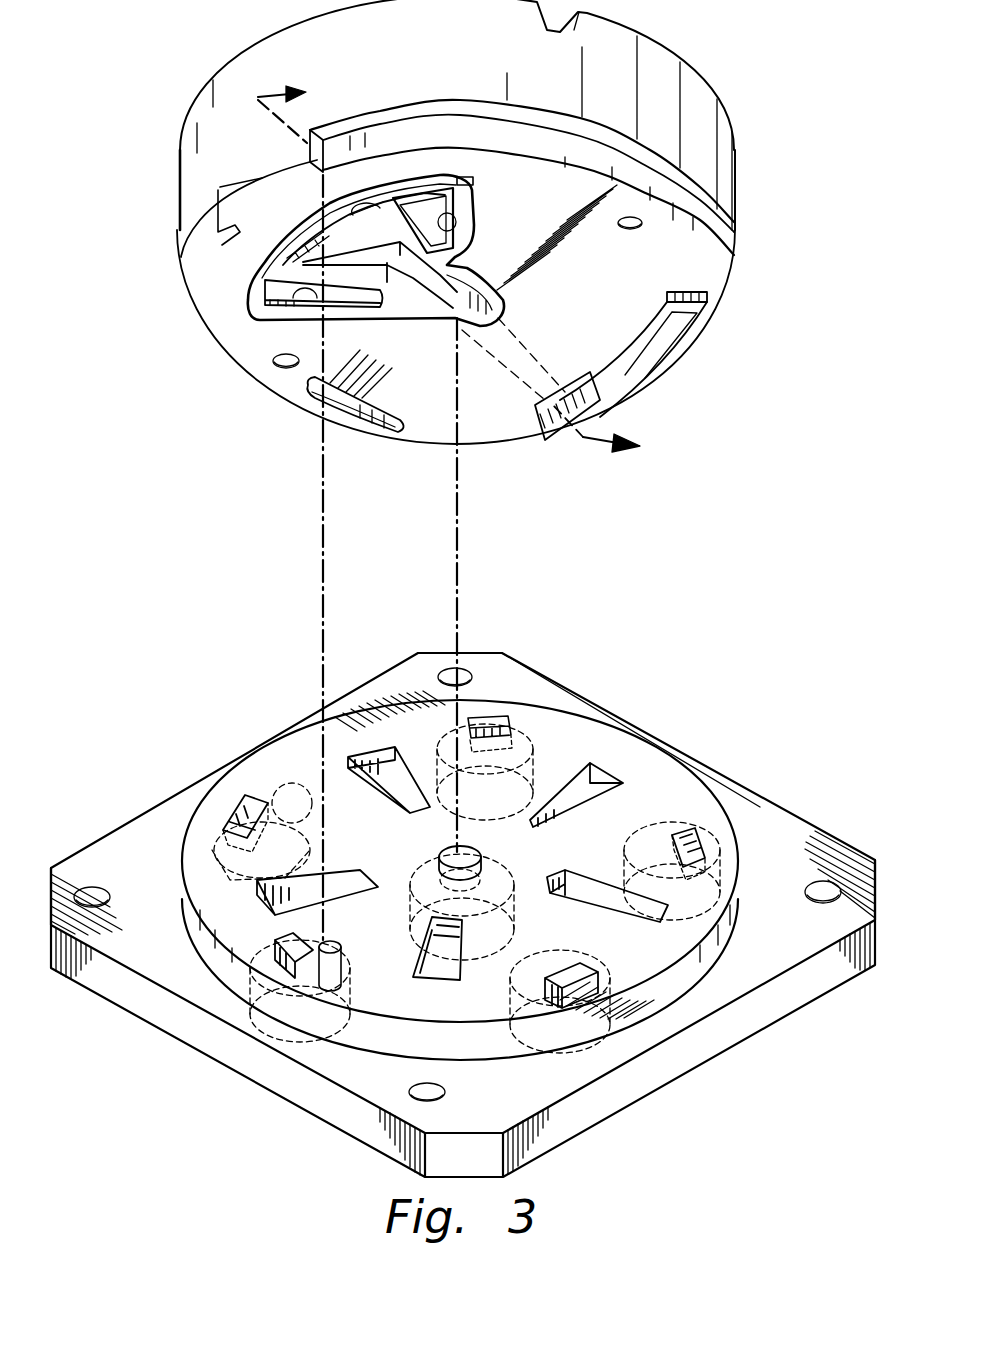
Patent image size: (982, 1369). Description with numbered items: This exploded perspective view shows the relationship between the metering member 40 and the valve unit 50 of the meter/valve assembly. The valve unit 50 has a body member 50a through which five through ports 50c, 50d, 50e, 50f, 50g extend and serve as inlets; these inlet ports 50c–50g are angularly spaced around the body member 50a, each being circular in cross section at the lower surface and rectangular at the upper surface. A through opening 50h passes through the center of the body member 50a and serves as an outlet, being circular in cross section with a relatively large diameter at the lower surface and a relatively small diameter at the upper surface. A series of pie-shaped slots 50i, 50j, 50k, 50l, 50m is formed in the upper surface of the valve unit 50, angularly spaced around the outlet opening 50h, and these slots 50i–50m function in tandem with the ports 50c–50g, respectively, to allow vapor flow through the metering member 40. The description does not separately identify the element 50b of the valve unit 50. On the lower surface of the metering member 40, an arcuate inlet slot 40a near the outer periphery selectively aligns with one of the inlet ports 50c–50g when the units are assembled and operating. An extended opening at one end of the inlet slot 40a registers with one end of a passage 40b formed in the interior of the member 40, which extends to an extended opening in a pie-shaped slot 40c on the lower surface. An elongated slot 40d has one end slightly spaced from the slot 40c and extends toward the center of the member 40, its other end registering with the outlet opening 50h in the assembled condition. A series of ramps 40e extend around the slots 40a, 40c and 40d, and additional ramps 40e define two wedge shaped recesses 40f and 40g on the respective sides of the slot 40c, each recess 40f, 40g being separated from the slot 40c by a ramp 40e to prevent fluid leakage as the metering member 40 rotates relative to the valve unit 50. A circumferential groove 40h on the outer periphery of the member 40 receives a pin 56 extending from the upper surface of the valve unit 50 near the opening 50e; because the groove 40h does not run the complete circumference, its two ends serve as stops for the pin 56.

The metering member 40 is at (740, 165).
The arcuate inlet slot 40a is at (656, 380).
The passage 40b is at (522, 334).
The pie-shaped slot 40c is at (330, 202).
The elongated slot 40d is at (442, 305).
The ramps 40e is at (478, 178).
The wedge shaped recess 40f is at (283, 312).
The wedge shaped recess 40g is at (458, 222).
The circumferential groove 40h is at (726, 292).
The valve unit 50 is at (752, 802).
The body member 50a is at (270, 750).
The plate top surface 50b is at (520, 677).
The inlet port 50c is at (642, 840).
The inlet port 50d is at (578, 954).
The inlet port 50e is at (343, 1040).
The inlet port 50f is at (270, 788).
The inlet port 50g is at (572, 770).
The outlet opening 50h is at (453, 850).
The pie-shaped slot 50i is at (353, 878).
The pie-shaped slot 50j is at (388, 797).
The pie-shaped slot 50k is at (610, 780).
The pie-shaped slot 50l is at (574, 878).
The pie-shaped slot 50m is at (428, 952).
The pin 56 is at (345, 982).